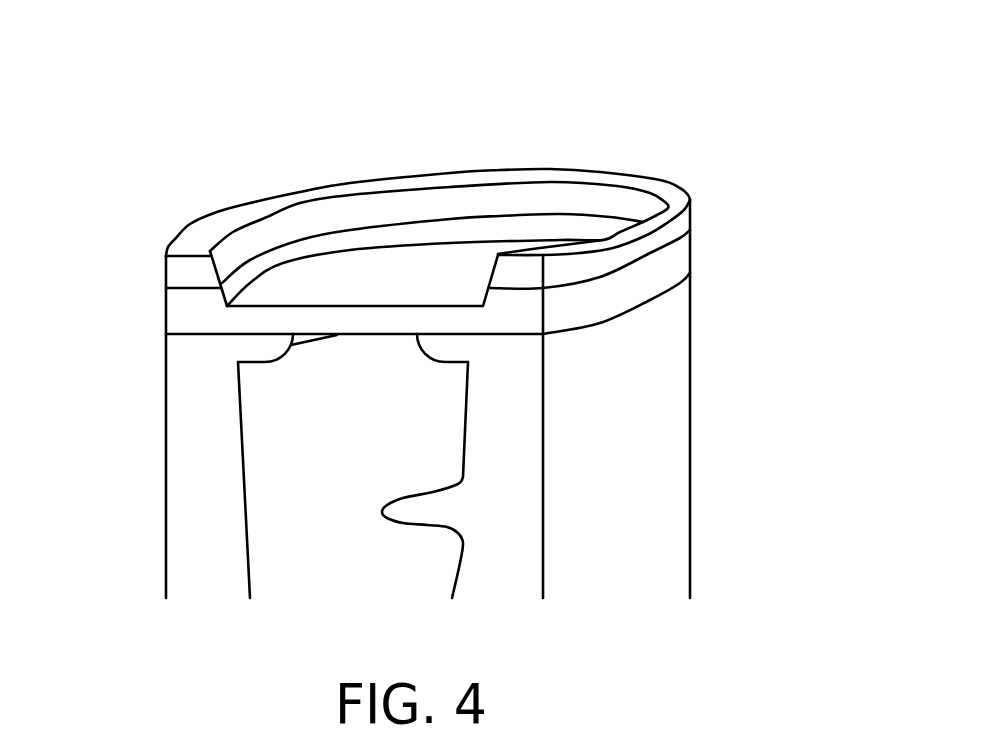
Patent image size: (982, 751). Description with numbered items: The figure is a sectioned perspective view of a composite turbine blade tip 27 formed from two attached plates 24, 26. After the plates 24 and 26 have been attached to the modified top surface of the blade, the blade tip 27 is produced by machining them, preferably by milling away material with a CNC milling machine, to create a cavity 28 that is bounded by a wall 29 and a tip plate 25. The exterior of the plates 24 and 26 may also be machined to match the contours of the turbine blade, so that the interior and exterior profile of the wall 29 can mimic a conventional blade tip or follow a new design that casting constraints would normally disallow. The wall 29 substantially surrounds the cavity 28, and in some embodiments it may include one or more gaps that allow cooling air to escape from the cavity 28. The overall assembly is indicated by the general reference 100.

The container 100 is at (768, 375).
The plate 24 is at (166, 315).
The tip plate 25 is at (340, 335).
The plate 26 is at (166, 273).
The blade tip 27 is at (748, 261).
The cavity 28 is at (430, 262).
The wall 29 is at (212, 265).